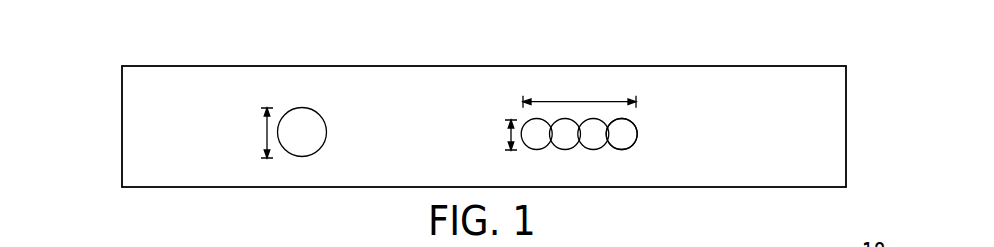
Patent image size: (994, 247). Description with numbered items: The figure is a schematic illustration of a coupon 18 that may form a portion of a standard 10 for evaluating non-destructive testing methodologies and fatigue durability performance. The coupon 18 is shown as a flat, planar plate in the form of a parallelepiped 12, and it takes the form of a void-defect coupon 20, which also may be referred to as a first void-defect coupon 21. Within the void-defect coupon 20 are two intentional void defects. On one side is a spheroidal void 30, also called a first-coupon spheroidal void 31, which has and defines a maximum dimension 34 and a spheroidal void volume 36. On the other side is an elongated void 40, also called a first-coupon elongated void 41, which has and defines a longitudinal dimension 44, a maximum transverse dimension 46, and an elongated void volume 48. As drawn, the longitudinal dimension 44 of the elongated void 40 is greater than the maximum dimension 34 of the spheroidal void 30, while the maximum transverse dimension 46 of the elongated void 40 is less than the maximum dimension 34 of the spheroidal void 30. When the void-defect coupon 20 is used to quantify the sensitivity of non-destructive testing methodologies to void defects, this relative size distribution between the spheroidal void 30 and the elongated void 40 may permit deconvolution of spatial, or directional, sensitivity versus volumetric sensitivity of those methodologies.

The standard 10 is at (67, 72).
The parallelepiped 12 is at (897, 102).
The coupon 18 is at (854, 52).
The void-defect coupon 20 is at (83, 118).
The first void-defect coupon 21 is at (97, 168).
The spheroidal void 30 is at (213, 123).
The first-coupon spheroidal void 31 is at (240, 112).
The maximum dimension 34 is at (266, 129).
The spheroidal void volume 36 is at (310, 132).
The elongated void 40 is at (666, 123).
The first-coupon elongated void 41 is at (657, 138).
The longitudinal dimension 44 is at (575, 101).
The maximum transverse dimension 46 is at (509, 134).
The elongated void volume 48 is at (622, 132).